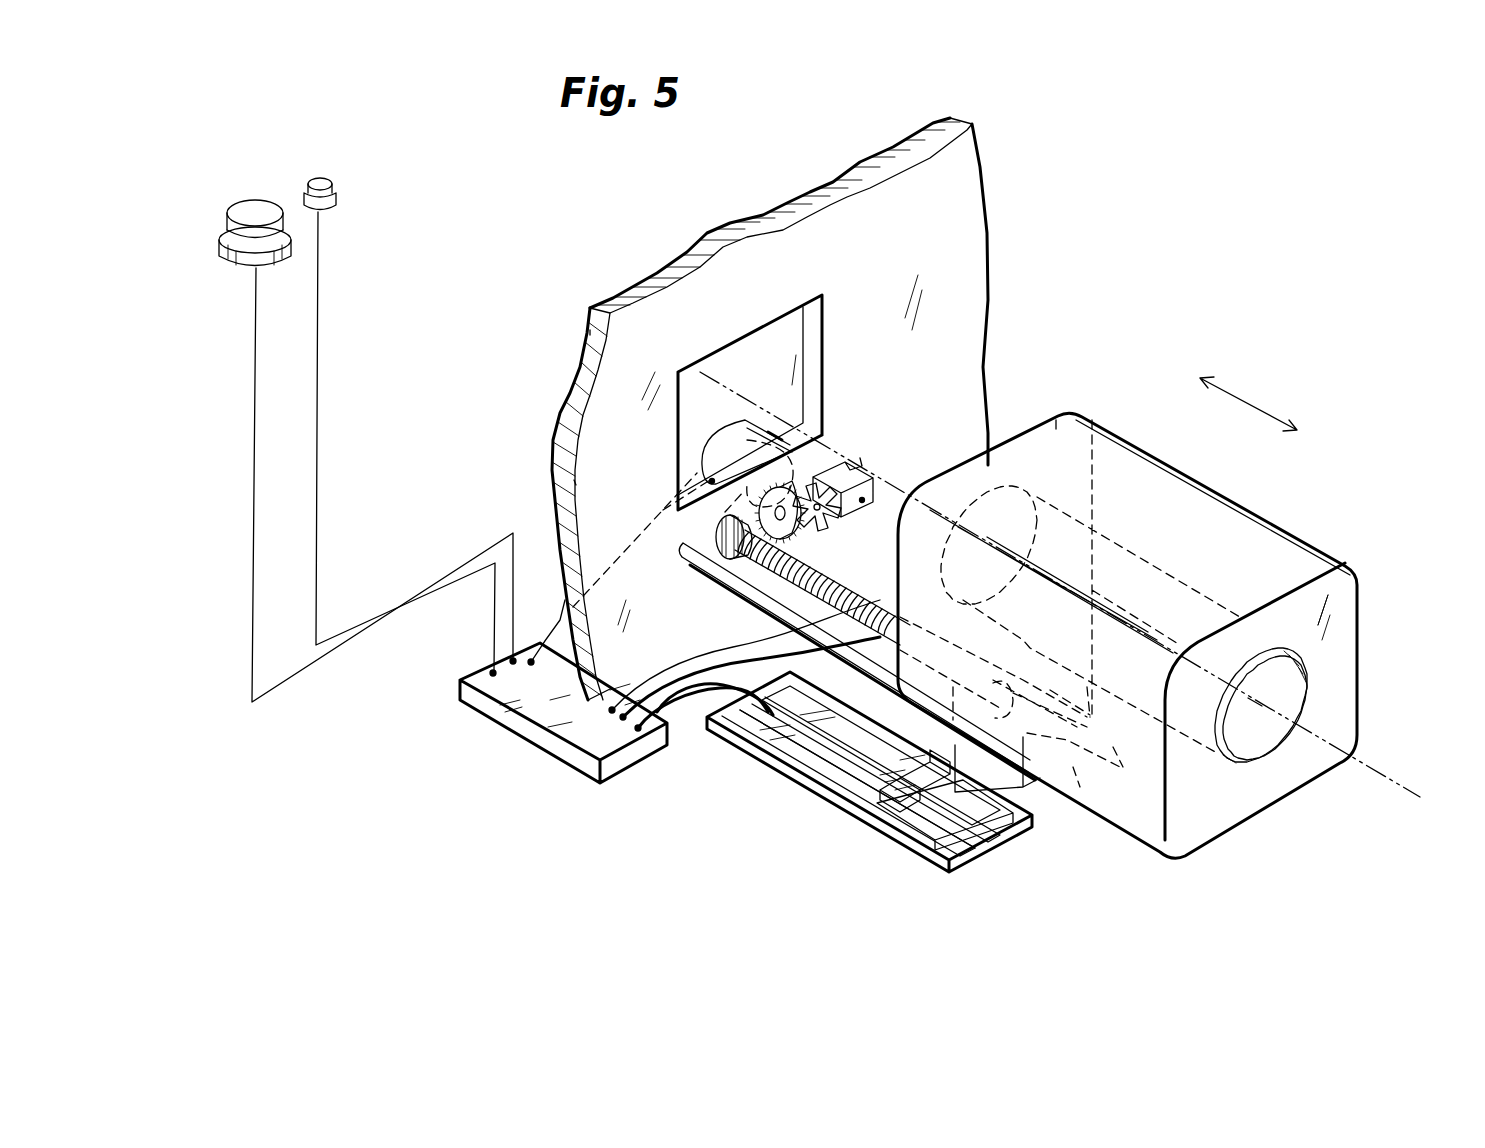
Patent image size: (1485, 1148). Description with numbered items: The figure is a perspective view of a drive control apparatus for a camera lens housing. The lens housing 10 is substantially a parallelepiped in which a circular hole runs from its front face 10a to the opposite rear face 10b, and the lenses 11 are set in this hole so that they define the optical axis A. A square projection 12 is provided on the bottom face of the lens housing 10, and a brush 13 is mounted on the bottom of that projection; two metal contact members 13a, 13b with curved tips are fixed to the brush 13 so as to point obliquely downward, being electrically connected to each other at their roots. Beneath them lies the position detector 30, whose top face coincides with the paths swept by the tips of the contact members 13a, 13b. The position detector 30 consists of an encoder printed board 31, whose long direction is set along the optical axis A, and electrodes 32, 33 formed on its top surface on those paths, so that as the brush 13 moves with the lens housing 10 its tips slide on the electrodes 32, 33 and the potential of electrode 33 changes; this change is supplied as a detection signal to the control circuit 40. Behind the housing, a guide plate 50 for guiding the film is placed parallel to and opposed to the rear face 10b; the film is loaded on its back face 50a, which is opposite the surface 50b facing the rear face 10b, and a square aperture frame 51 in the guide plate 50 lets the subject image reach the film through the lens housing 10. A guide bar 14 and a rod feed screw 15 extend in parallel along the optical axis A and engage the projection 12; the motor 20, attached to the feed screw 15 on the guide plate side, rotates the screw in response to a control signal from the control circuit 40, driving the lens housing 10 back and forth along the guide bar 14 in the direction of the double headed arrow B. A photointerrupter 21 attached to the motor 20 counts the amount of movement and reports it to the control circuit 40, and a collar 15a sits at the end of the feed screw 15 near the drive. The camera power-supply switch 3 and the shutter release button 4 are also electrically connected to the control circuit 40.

The camera power-supply switch 3 is at (320, 180).
The shutter release button 4 is at (252, 216).
The lens housing 10 is at (1232, 502).
The front face 10a is at (1345, 582).
The rear face 10b is at (1056, 419).
The lenses 11 is at (1270, 687).
The square projection 12 is at (1013, 800).
The brush 13 is at (979, 786).
The contact member 13a is at (920, 773).
The contact member 13b is at (880, 787).
The guide bar 14 is at (745, 580).
The rod feed screw 15 is at (863, 595).
The shaft collar 15a is at (740, 558).
The motor 20 is at (770, 430).
The photointerrupter 21 is at (857, 470).
The position detector 30 is at (894, 860).
The encoder printed board 31 is at (707, 720).
The electrode 32 is at (777, 743).
The electrode 33 is at (830, 727).
The control circuit 40 is at (550, 703).
The guide plate 50 is at (972, 240).
The back face 50a is at (566, 402).
The surface 50b is at (555, 485).
The square aperture frame 51 is at (822, 320).
The optical axis A is at (1373, 787).
The double headed arrow B is at (1248, 405).